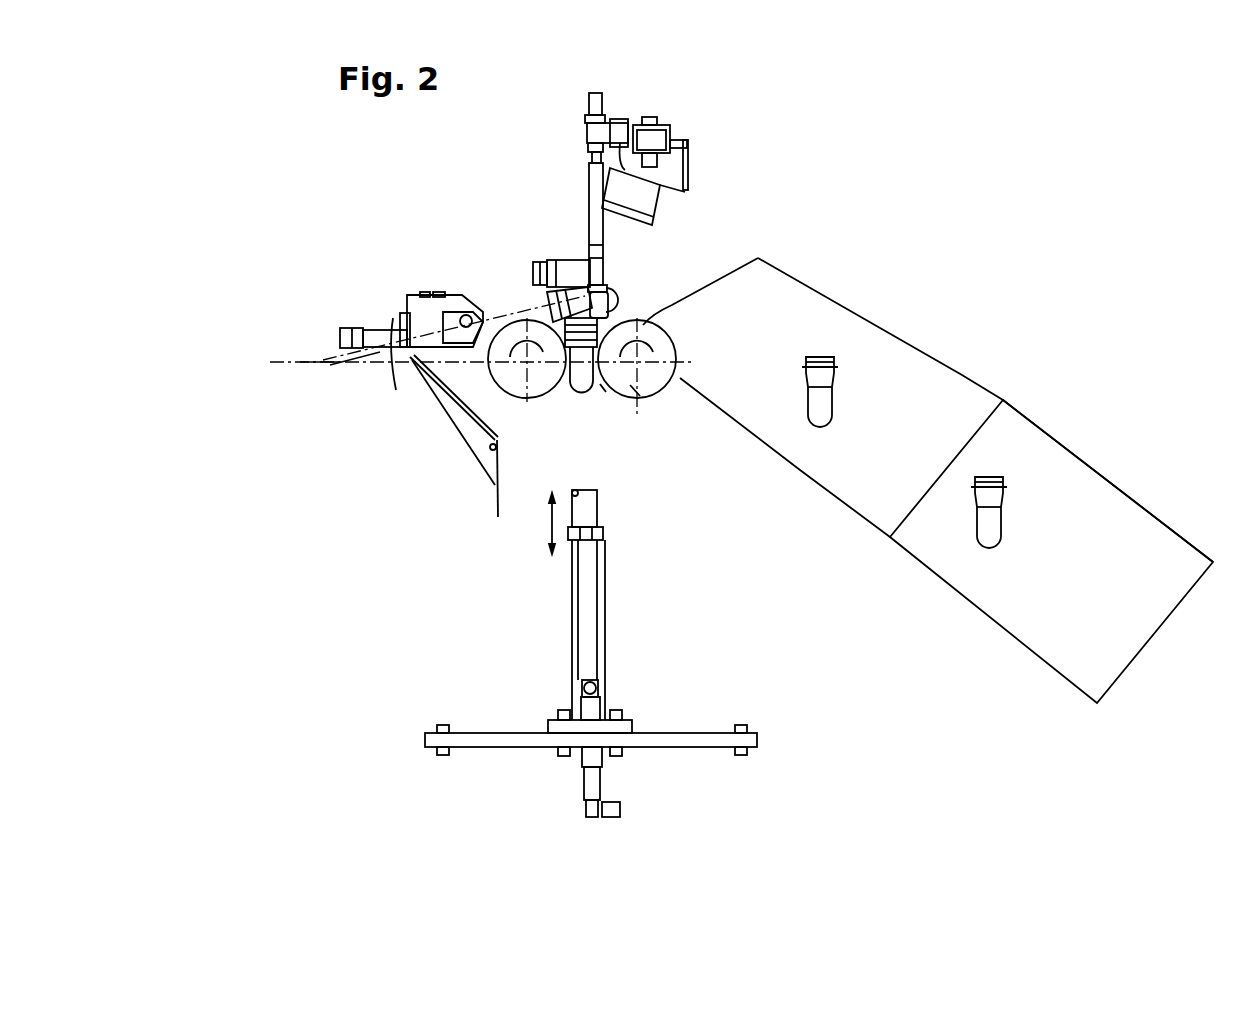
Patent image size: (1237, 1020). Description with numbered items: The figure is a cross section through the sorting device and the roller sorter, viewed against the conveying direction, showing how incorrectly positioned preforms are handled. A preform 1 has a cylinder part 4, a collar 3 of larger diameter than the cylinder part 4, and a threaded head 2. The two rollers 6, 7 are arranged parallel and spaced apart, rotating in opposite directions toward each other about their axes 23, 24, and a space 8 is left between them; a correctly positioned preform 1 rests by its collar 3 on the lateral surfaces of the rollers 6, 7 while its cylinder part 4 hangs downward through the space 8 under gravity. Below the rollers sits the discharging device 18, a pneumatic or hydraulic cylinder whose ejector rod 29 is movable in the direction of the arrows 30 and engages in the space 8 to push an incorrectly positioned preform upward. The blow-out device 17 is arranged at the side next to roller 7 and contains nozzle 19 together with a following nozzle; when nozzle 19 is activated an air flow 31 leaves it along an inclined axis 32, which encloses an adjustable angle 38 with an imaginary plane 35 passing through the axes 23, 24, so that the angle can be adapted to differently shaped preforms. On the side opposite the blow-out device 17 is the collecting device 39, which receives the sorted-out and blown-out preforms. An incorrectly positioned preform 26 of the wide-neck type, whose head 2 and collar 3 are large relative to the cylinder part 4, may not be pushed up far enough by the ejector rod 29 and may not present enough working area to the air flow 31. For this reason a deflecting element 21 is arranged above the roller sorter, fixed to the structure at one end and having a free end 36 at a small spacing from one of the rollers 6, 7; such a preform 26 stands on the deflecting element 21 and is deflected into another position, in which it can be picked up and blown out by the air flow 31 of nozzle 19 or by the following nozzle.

The preform 1 is at (572, 390).
The head 2 is at (535, 267).
The collar 3 is at (633, 390).
The cylinder part 4 is at (585, 387).
The roller 6 is at (648, 377).
The roller 7 is at (517, 398).
The space 8 is at (602, 388).
The blow-out device 17 is at (437, 310).
The discharging device 18 is at (587, 593).
The nozzle 19 is at (463, 317).
The deflecting element 21 is at (592, 203).
The axis 23 is at (931, 378).
The axis 24 is at (527, 358).
The incorrectly positioned preform 26 is at (617, 290).
The ejector rod 29 is at (597, 512).
The arrows 30 is at (550, 530).
The air flow 31 is at (535, 293).
The axis 32 is at (323, 360).
The imaginary plane 35 is at (353, 367).
The free end 36 is at (638, 300).
The angle 38 is at (390, 327).
The collecting device 39 is at (957, 390).